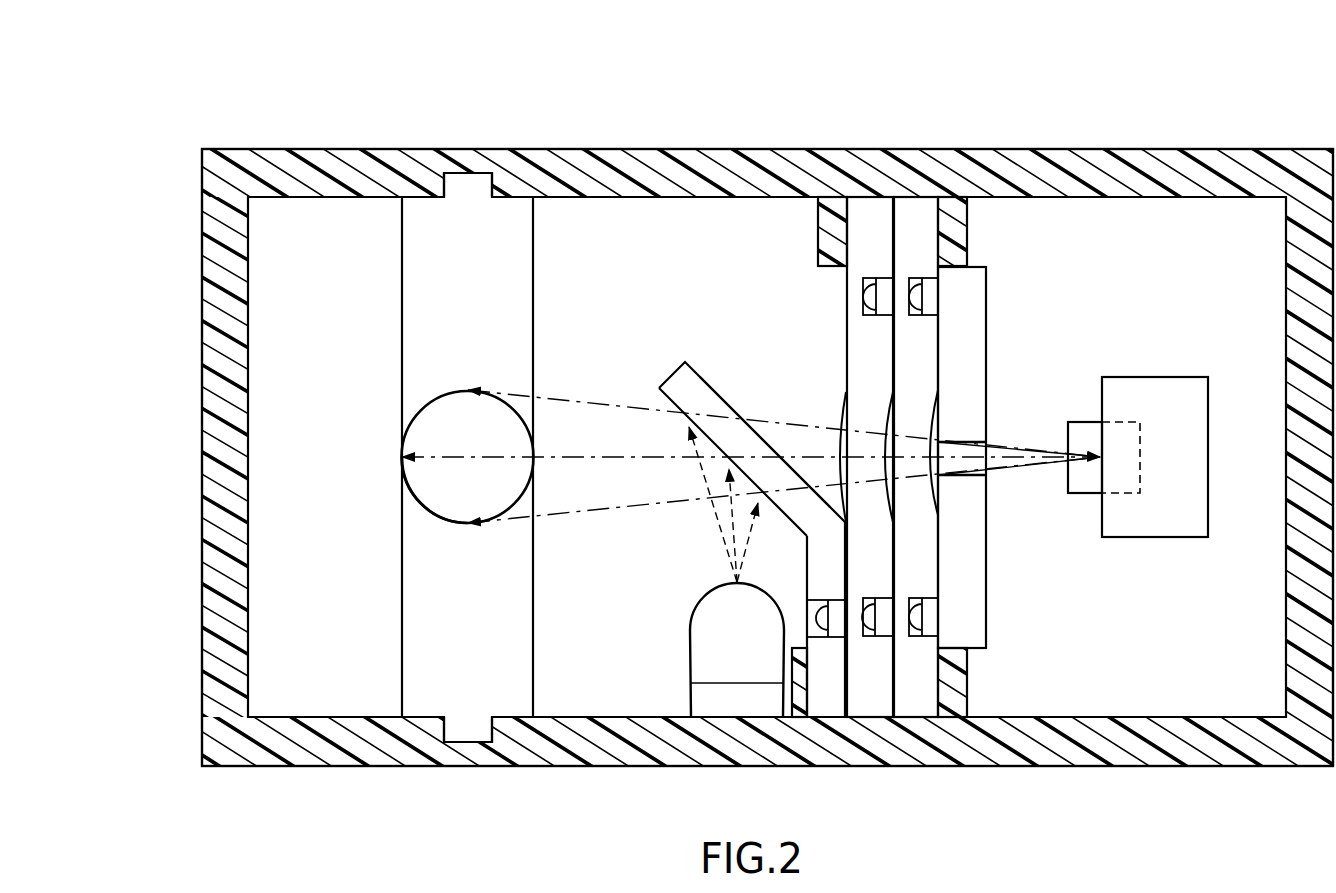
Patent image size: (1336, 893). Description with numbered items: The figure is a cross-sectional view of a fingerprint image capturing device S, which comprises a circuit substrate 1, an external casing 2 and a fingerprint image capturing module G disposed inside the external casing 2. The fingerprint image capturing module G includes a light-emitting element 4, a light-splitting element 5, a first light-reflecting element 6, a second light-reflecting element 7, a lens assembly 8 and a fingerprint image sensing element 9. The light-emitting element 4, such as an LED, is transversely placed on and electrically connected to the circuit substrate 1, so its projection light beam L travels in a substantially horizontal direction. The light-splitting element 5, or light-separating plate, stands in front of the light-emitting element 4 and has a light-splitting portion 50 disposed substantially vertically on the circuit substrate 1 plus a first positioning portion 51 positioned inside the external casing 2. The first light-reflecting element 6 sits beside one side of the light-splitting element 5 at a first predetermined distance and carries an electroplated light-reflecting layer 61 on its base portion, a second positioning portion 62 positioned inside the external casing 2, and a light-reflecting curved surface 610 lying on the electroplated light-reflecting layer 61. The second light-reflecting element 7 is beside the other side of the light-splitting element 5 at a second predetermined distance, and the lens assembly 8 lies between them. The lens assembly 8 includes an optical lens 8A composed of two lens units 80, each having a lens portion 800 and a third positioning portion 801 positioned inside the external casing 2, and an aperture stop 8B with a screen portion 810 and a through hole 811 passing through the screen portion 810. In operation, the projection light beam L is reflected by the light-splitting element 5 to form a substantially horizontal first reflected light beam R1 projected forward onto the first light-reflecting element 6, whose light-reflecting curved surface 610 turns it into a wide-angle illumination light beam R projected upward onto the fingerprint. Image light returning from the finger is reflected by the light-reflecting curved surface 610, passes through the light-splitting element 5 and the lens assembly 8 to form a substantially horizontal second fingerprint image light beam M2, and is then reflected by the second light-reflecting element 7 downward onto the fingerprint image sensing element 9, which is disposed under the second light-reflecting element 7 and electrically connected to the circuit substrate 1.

The fingerprint image capturing device S is at (183, 93).
The circuit substrate 1 is at (270, 268).
The external casing 2 is at (196, 351).
The fingerprint image capturing module G is at (298, 692).
The first light-reflecting element 6 is at (427, 684).
The electroplated light-reflecting layer 61 is at (414, 486).
The light-reflecting curved surface 610 is at (446, 503).
The second positioning portion 62 is at (468, 672).
The illumination light beam R is at (597, 585).
The first reflected light beam R1 is at (593, 405).
The light-splitting element 5 is at (664, 366).
The light-splitting portion 50 is at (700, 395).
The first positioning portion 51 is at (828, 690).
The light-emitting element 4 is at (718, 690).
The projection light beam L is at (742, 563).
The lens assembly 8 is at (1004, 303).
The optical lens 8A is at (948, 84).
The lens unit 80 is at (872, 212).
The lens portion 800 is at (845, 415).
The third positioning portion 801 is at (860, 333).
The aperture stop 8B is at (1080, 556).
The screen portion 810 is at (968, 600).
The through hole 811 is at (963, 466).
The second fingerprint image light beam M2 is at (1010, 448).
The fingerprint image sensing element 9 is at (1080, 408).
The second light-reflecting element 7 is at (1158, 364).